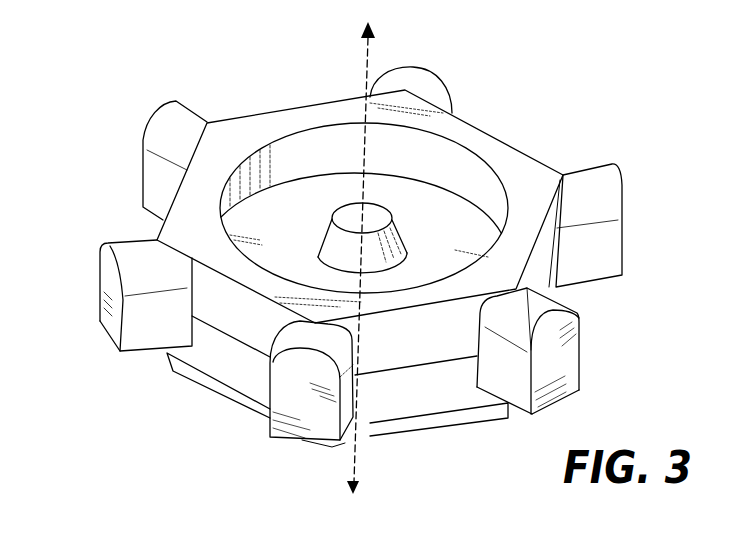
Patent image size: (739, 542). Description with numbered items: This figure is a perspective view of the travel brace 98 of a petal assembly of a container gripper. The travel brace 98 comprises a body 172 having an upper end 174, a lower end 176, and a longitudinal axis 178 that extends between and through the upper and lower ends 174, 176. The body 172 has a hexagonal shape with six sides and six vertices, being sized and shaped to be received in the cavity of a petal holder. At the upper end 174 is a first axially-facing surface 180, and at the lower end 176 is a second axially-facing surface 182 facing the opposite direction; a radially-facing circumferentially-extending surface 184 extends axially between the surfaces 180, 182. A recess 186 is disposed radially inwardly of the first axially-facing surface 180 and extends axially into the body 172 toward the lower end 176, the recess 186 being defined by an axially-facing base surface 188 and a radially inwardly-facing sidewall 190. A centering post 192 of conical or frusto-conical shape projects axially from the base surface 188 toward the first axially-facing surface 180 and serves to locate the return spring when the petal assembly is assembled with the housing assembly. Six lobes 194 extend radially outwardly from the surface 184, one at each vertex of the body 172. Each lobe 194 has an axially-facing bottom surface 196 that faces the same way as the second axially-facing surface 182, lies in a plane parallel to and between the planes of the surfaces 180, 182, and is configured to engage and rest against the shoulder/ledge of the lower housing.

The travel brace 98 is at (92, 146).
The body 172 is at (483, 127).
The upper end 174 is at (229, 88).
The lower end 176 is at (126, 387).
The longitudinal axis 178 is at (366, 45).
The first axially-facing surface 180 is at (290, 118).
The second axially-facing surface 182 is at (458, 427).
The radially-facing circumferentially-extending surface 184 is at (235, 353).
The recess 186 is at (437, 157).
The base surface 188 is at (273, 254).
The sidewall 190 is at (487, 180).
The centering post 192 is at (357, 200).
The lobes 194 is at (600, 173).
The bottom surface 196 is at (562, 392).